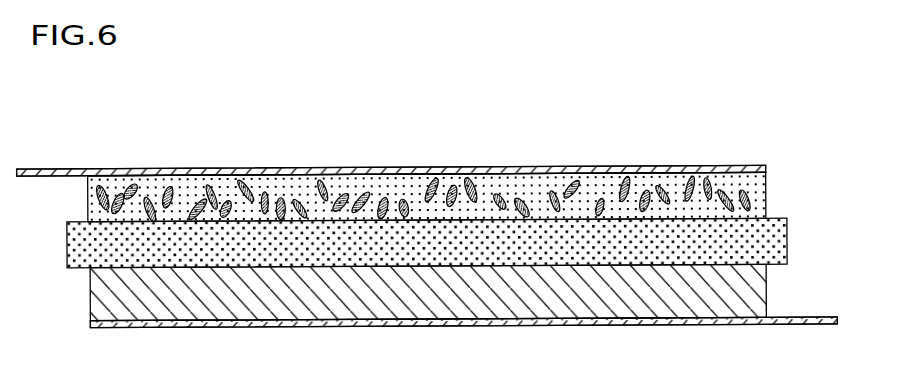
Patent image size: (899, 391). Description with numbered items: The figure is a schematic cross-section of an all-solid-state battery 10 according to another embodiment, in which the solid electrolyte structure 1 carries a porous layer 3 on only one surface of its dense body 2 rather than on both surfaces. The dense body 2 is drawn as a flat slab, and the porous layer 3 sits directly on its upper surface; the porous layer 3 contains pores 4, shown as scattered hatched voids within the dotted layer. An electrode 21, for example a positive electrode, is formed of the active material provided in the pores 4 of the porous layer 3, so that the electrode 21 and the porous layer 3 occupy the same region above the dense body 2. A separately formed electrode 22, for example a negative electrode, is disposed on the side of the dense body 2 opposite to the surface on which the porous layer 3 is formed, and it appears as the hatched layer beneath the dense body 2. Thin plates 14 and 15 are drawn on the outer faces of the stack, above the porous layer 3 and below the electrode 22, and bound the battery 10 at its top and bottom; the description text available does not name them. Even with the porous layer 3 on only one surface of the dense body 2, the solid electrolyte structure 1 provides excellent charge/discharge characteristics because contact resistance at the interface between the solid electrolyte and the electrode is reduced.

The solid electrolyte structure 1 is at (466, 180).
The dense body 2 is at (450, 243).
The porous layer 3 is at (459, 157).
The pores 4 is at (697, 176).
The all-solid-state battery 10 is at (564, 119).
The upper film 14 is at (69, 167).
The lower film 15 is at (788, 320).
The electrode 21 is at (340, 178).
The electrode 22 is at (360, 300).